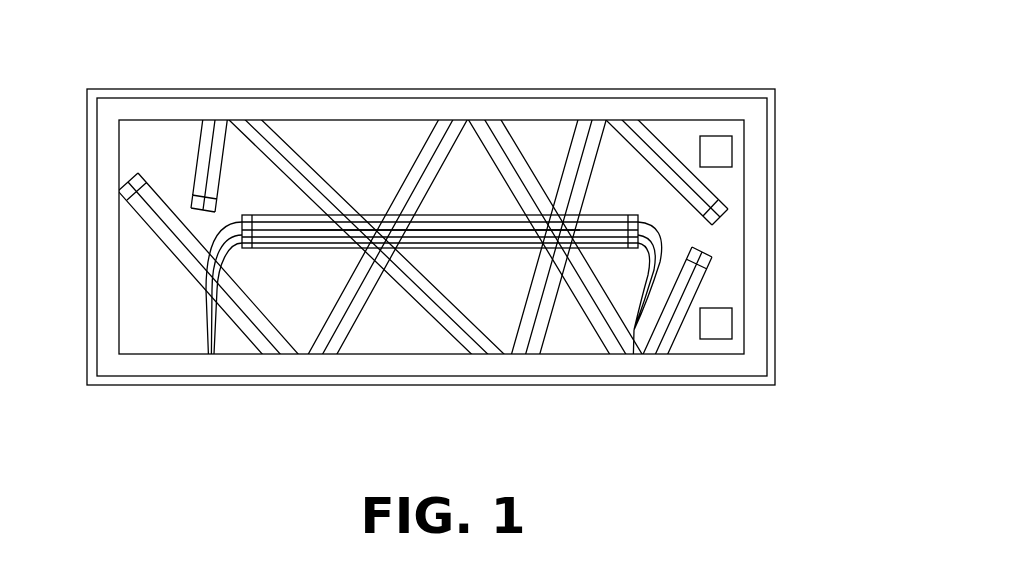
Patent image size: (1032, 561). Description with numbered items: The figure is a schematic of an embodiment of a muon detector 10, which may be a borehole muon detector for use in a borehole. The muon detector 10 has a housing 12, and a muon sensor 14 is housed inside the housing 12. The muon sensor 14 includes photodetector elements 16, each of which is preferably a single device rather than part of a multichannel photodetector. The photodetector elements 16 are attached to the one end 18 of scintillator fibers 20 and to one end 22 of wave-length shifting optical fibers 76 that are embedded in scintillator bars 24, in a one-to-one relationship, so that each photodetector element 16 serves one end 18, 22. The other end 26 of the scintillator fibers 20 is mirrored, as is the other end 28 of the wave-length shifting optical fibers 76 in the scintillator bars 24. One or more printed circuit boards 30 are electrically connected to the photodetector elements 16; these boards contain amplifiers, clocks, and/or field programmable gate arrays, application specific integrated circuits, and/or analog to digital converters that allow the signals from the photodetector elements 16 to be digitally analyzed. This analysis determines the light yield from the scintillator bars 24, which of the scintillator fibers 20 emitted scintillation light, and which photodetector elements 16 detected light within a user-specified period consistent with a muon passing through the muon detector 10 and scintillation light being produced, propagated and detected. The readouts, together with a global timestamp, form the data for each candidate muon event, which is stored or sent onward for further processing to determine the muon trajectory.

The muon detector 10 is at (834, 62).
The housing 12 is at (767, 135).
The muon sensor 14 is at (157, 326).
The photodetector element 16 is at (798, 245).
The one end of scintillator fibers 18 is at (728, 215).
The scintillator fibers 20 is at (653, 148).
The one end of wave-length shifting optical fibers 22 is at (637, 245).
The scintillator bars 24 is at (347, 228).
The other end of scintillator fibers 26 is at (190, 200).
The other end of wave-length shifting optical fiber 28 is at (218, 325).
The printed circuit boards 30 is at (717, 150).
The wave-length shifting optical fibers 76 is at (462, 221).